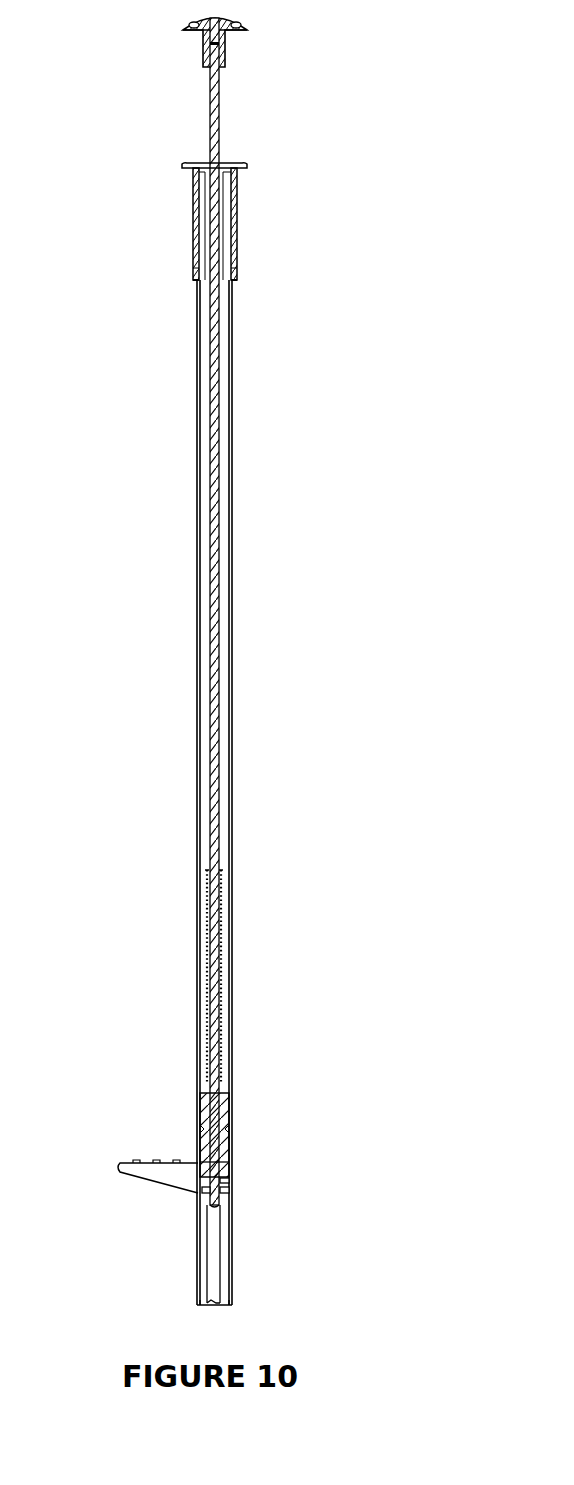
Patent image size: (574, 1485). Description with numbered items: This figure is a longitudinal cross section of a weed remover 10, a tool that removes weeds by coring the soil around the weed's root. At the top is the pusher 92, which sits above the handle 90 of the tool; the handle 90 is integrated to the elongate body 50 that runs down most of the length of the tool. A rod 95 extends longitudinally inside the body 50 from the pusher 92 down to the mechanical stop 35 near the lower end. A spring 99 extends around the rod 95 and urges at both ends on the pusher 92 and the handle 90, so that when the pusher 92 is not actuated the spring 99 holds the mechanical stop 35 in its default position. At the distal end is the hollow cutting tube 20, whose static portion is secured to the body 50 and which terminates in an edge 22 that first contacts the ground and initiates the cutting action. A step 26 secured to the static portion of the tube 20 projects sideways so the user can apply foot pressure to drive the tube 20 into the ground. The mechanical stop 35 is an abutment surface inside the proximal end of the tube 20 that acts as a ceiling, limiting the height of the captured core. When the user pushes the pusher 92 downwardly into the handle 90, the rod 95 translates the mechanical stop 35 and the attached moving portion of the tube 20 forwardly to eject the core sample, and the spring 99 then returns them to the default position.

The weed remover 10 is at (283, 492).
The cutting tube 20 is at (232, 1268).
The edge 22 is at (200, 1305).
The step 26 is at (172, 1178).
The mechanical stop 35 is at (232, 1193).
The body 50 is at (233, 367).
The handle 90 is at (190, 167).
The pusher 92 is at (185, 23).
The rod 95 is at (219, 100).
The spring 99 is at (222, 968).